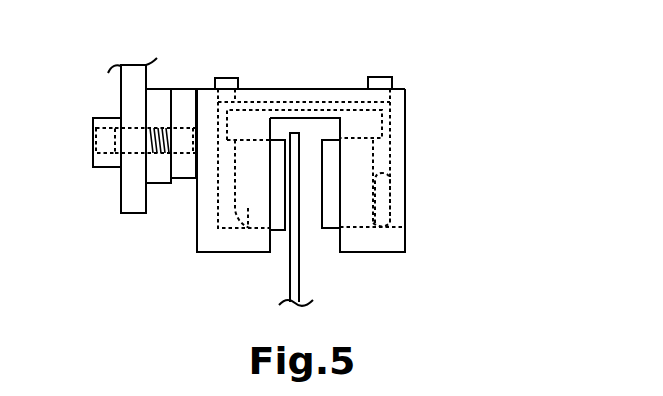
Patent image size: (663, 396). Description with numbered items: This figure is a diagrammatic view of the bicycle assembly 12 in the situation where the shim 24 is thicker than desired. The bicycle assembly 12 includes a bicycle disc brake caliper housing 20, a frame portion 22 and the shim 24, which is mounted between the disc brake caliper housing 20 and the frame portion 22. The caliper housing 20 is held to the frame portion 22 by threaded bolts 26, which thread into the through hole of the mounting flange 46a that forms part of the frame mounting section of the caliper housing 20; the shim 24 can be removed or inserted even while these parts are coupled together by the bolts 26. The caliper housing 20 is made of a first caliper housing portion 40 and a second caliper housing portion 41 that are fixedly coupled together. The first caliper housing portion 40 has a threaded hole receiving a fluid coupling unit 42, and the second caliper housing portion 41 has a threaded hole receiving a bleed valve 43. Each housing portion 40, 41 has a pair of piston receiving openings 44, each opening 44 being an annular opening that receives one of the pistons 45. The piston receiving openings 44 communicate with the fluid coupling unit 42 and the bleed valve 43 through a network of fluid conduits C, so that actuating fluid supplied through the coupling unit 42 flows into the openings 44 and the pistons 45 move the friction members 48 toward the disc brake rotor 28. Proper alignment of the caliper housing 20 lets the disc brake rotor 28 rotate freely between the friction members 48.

The bicycle assembly 12 is at (455, 82).
The bicycle disc brake caliper housing 20 is at (344, 163).
The frame portion 22 is at (133, 216).
The shim 24 is at (165, 88).
The threaded bolts 26 is at (101, 168).
The disc brake rotor 28 is at (300, 277).
The first caliper housing portion 40 is at (350, 88).
The second caliper housing portion 41 is at (270, 88).
The fluid coupling unit 42 is at (392, 77).
The bleed valve 43 is at (231, 78).
The piston receiving openings 44 is at (252, 203).
The pistons 45 is at (248, 228).
The mounting flange 46a is at (185, 179).
The friction members 48 is at (275, 140).
The network of fluid conduits C is at (390, 122).